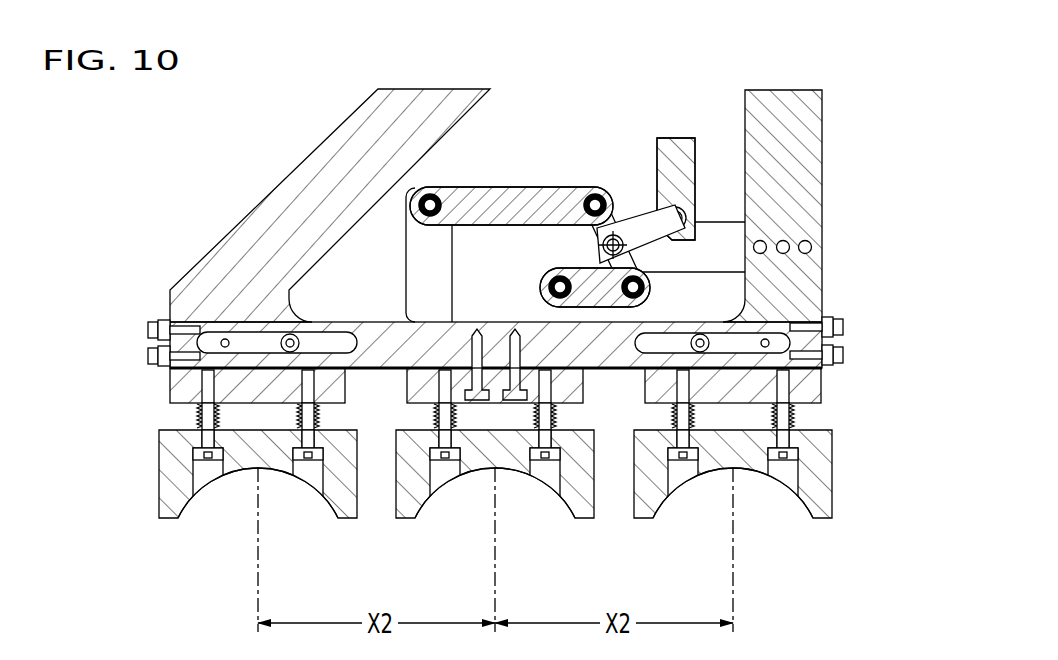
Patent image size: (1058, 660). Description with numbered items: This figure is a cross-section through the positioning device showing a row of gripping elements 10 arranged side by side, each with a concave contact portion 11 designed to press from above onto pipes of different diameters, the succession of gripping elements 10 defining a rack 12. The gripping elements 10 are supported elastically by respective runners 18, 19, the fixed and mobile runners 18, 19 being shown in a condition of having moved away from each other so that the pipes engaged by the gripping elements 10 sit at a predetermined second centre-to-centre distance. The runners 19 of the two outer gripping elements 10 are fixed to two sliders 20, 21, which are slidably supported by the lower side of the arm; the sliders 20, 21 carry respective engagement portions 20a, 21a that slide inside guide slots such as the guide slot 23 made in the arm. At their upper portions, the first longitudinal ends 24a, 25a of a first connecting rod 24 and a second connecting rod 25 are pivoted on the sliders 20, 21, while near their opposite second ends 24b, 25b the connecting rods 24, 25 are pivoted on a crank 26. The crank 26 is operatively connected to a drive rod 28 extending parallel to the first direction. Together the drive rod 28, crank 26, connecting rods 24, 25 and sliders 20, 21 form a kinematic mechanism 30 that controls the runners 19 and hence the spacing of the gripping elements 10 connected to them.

The gripping element 10 is at (157, 480).
The contact portion 11 is at (195, 504).
The rack 12 is at (131, 497).
The runner 18 is at (574, 394).
The runner 19 is at (168, 388).
The slider 20 is at (567, 316).
The engagement portion 20a is at (742, 334).
The slider 21 is at (430, 290).
The engagement portion 21a is at (248, 343).
The guide slot 23 is at (337, 345).
The first connecting rod 24 is at (585, 286).
The first longitudinal end 24a is at (548, 270).
The second end 24b is at (654, 292).
The second connecting rod 25 is at (507, 192).
The first longitudinal end 25a is at (434, 191).
The second end 25b is at (588, 191).
The crank 26 is at (620, 202).
The drive rod 28 is at (676, 160).
The kinematic mechanism 30 is at (678, 132).